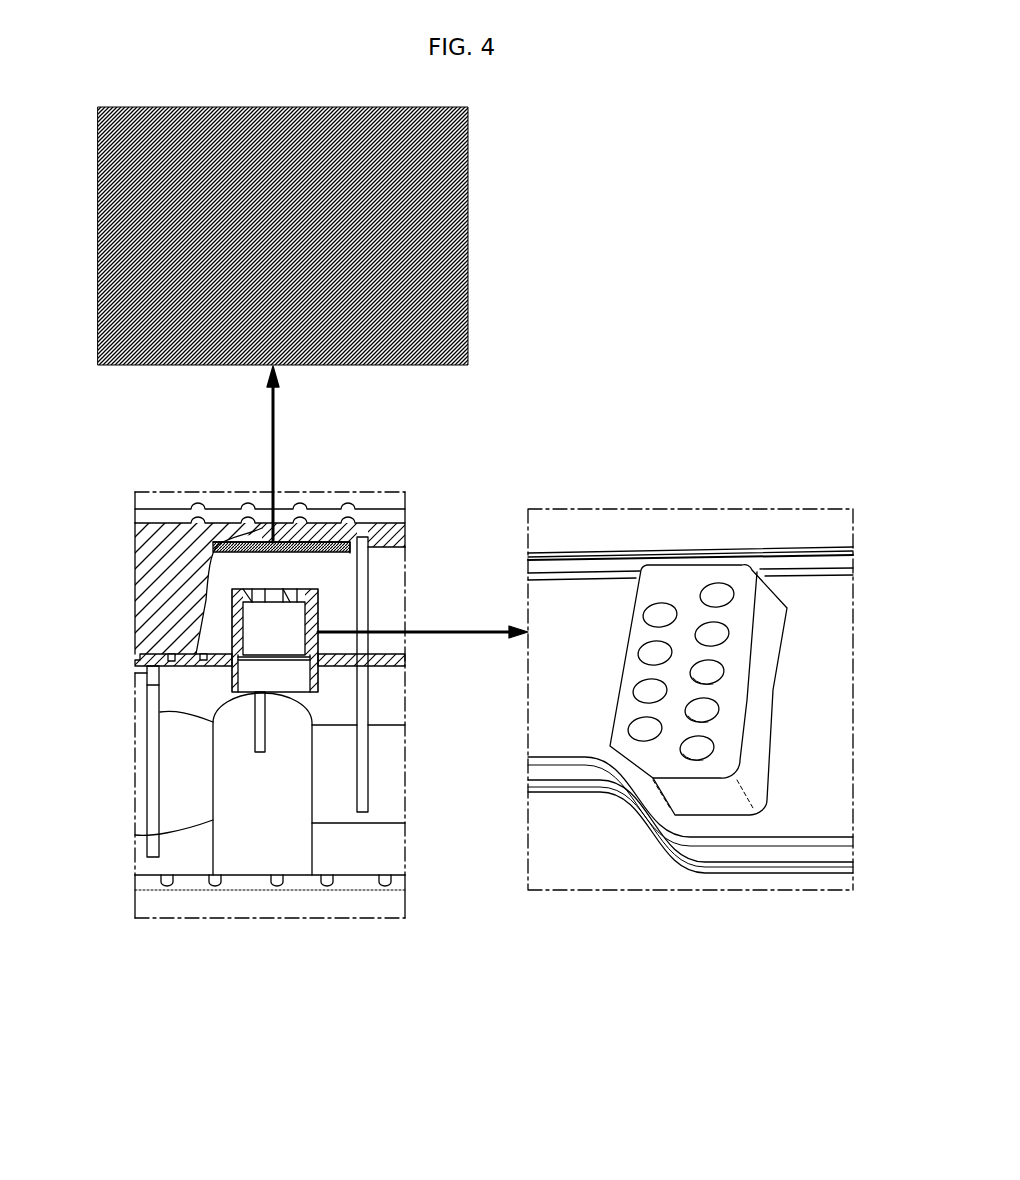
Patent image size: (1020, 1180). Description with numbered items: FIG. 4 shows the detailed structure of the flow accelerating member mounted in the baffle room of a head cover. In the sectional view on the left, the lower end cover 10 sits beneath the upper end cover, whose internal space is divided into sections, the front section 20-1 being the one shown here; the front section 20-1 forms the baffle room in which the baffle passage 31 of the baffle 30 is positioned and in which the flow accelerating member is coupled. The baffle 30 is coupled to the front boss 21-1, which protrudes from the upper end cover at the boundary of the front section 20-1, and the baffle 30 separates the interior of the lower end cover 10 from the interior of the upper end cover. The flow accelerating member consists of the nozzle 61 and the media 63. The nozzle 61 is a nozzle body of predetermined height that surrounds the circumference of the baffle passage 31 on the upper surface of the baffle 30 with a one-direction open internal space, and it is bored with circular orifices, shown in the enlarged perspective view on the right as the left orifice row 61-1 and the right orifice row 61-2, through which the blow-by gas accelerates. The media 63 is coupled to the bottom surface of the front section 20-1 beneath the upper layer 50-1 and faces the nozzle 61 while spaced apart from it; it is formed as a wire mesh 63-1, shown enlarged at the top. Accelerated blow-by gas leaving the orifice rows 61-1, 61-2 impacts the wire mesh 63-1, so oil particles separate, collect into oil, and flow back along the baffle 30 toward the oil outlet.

The wire mesh 63-1 is at (468, 210).
The media 63 is at (233, 542).
The upper layer 50-1 is at (368, 543).
The holes 61-1 is at (256, 594).
The holes / lower element 61-2 is at (293, 592).
The front section 20-1 is at (383, 602).
The nozzle 61 is at (478, 610).
The front boss 21-1 is at (162, 654).
The baffle 30 is at (183, 670).
The lower end cover 10 is at (257, 828).
The baffle passage 31 is at (273, 667).